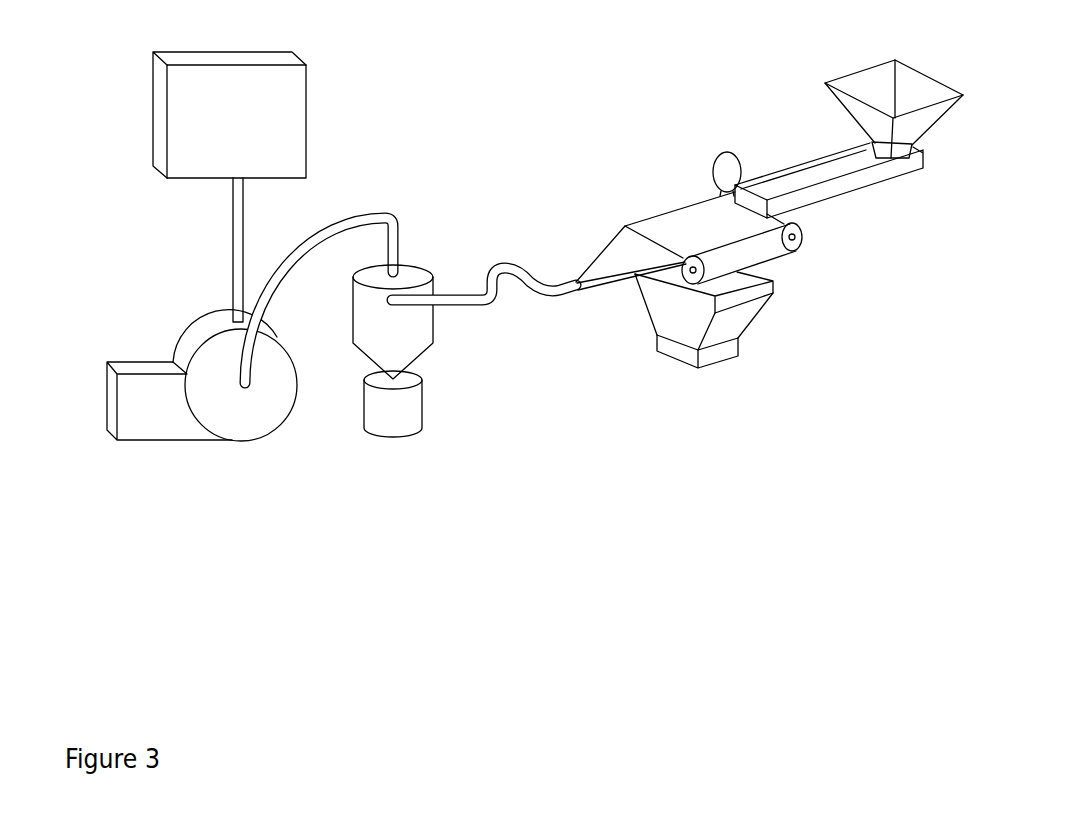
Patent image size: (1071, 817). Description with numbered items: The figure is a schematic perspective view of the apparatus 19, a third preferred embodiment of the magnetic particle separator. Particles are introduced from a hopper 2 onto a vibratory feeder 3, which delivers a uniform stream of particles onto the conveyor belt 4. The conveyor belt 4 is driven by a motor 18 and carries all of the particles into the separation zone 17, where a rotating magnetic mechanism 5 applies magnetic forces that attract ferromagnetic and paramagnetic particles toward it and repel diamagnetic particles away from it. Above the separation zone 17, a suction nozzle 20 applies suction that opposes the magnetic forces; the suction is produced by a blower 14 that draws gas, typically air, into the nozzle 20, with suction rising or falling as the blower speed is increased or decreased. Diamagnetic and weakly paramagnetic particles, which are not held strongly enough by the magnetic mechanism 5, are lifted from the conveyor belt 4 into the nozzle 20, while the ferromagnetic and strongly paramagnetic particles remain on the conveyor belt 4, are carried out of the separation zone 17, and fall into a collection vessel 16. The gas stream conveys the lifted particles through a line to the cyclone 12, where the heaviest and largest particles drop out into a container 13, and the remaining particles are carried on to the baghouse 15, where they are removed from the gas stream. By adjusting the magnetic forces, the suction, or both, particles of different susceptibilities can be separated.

The hopper 2 is at (894, 109).
The vibratory feeder 3 is at (829, 180).
The conveyor belt 4 is at (710, 238).
The magnetic mechanism 5 is at (684, 277).
The cyclone 12 is at (393, 322).
The container 13 is at (393, 404).
The blower 14 is at (202, 375).
The baghouse 15 is at (229, 187).
The collection vessel 16 is at (704, 320).
The separation zone 17 is at (649, 239).
The motor 18 is at (728, 174).
The apparatus 19 is at (488, 133).
The suction nozzle 20 is at (631, 267).